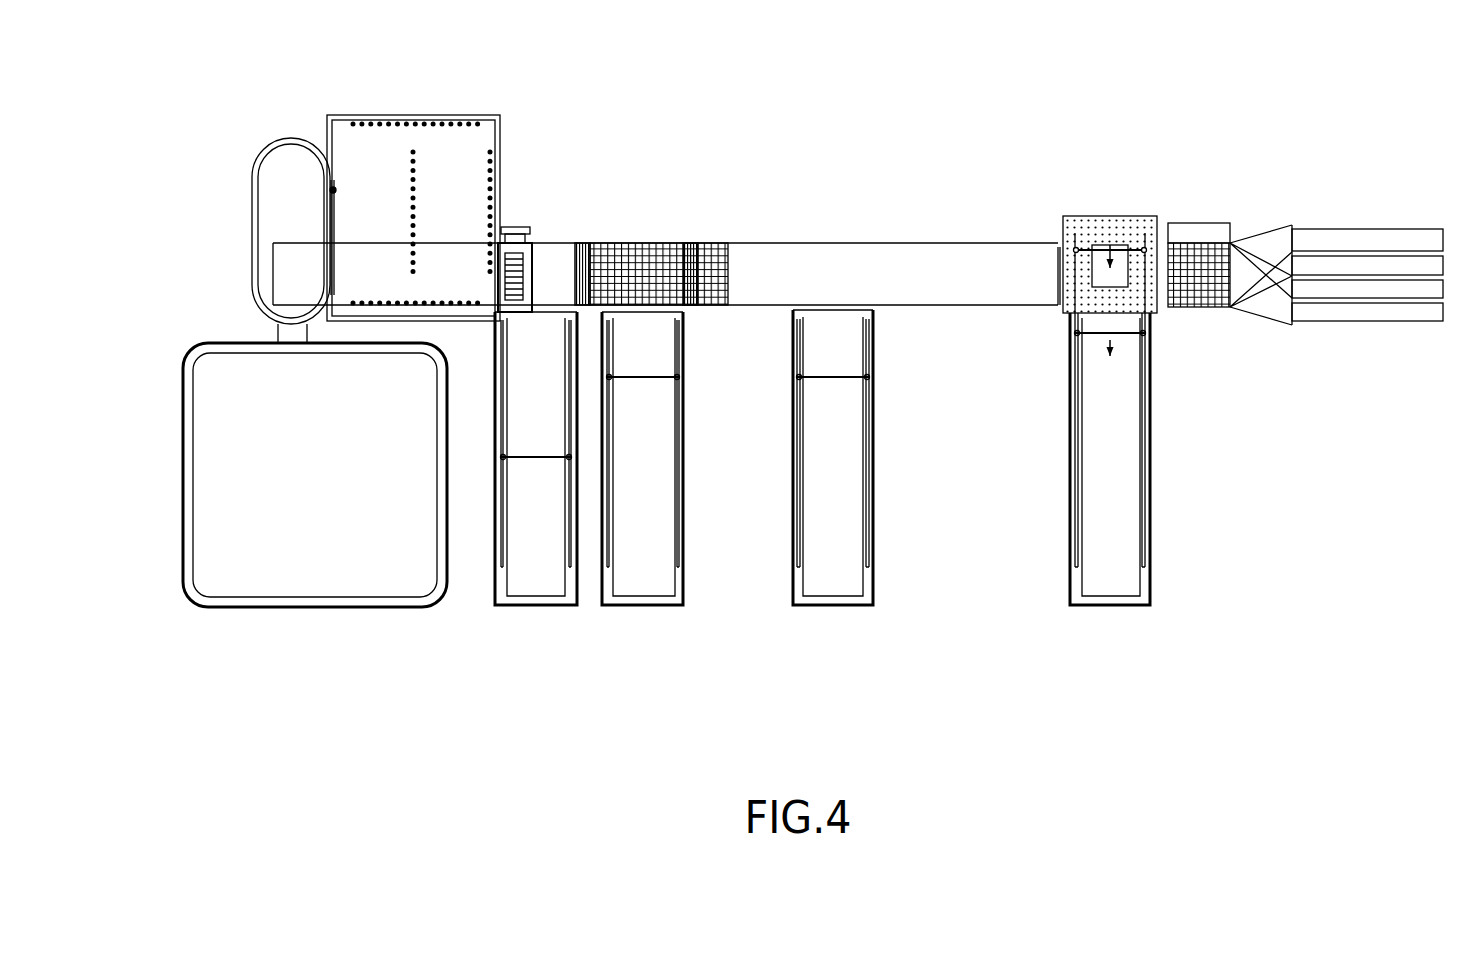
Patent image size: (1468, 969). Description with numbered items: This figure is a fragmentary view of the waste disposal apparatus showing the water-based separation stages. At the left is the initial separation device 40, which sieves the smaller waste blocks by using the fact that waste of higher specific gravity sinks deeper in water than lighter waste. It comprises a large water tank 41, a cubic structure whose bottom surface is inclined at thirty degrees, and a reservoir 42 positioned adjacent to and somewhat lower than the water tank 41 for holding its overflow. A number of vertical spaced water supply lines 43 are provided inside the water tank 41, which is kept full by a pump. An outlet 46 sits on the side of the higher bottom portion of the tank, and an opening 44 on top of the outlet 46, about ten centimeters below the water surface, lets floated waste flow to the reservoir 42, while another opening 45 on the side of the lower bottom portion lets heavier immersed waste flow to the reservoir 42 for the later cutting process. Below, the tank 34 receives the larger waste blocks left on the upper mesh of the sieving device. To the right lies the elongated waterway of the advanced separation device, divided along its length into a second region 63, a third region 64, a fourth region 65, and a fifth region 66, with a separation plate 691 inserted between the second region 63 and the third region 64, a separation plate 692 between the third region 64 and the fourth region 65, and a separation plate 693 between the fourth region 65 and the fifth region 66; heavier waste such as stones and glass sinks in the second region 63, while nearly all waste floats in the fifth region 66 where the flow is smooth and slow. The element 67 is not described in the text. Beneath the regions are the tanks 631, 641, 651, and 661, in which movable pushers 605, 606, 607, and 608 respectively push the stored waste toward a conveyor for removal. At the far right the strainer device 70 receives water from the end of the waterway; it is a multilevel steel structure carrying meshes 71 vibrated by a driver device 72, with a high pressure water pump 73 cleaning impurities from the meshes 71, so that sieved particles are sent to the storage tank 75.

The initial separation device 40 is at (446, 108).
The water tank 41 is at (480, 134).
The reservoir 42 is at (296, 279).
The water supply lines 43 is at (423, 275).
The opening 44 is at (365, 243).
The opening 45 is at (500, 298).
The outlet 46 is at (333, 190).
The tank 34 is at (215, 443).
The second region 63 is at (543, 262).
The third region 64 is at (696, 319).
The fourth region 65 is at (843, 260).
The fifth region 66 is at (1113, 203).
The filter grid 67 is at (667, 250).
The separation plate 691 is at (590, 265).
The separation plate 692 is at (700, 273).
The separation plate 693 is at (1080, 290).
The strainer device 70 is at (1208, 213).
The meshes 71 is at (1188, 297).
The driver device 72 is at (1222, 232).
The high pressure water pump 73 is at (1214, 315).
The storage tank 75 is at (1372, 315).
The movable pusher 605 is at (536, 460).
The movable pusher 606 is at (653, 378).
The movable pusher 607 is at (843, 378).
The movable pusher 608 is at (1098, 338).
The tank 631 is at (542, 588).
The tank 641 is at (652, 588).
The tank 651 is at (840, 588).
The tank 661 is at (1112, 588).